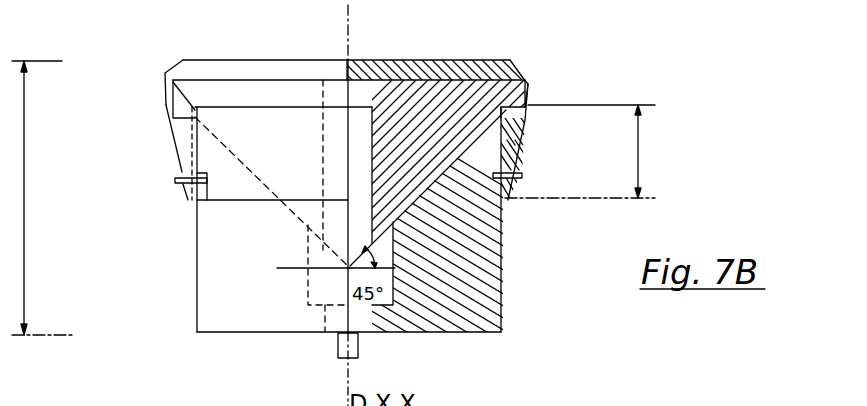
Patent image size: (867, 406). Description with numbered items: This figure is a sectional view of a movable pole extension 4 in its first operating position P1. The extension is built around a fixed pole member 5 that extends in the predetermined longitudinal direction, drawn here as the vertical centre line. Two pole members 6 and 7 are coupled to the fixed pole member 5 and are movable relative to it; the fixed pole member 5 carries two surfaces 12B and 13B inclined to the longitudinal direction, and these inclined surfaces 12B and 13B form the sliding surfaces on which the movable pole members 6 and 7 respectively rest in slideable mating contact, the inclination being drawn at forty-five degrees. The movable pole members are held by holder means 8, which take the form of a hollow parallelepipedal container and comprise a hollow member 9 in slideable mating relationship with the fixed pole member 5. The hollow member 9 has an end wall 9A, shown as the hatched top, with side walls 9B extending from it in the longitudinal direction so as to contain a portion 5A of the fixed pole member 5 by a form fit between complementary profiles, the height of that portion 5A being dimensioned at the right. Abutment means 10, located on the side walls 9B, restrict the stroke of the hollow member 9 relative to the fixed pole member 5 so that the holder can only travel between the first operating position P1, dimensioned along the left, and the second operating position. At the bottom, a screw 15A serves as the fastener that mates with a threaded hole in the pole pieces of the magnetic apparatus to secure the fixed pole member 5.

The movable pole extension 4 is at (612, 83).
The fixed pole member 5 is at (197, 290).
The portion of the fixed pole member 5A is at (589, 151).
The movable pole member 6 is at (426, 136).
The movable pole member 7 is at (278, 148).
The holder means 8 is at (148, 69).
The hollow member 9 is at (530, 73).
The end wall 9A is at (465, 60).
The side walls 9B is at (165, 138).
The abutment means 10 is at (177, 183).
The inclined surface 12B is at (440, 180).
The inclined surface 13B is at (308, 224).
The screw 15A is at (360, 335).
The first operating position P1 is at (42, 198).